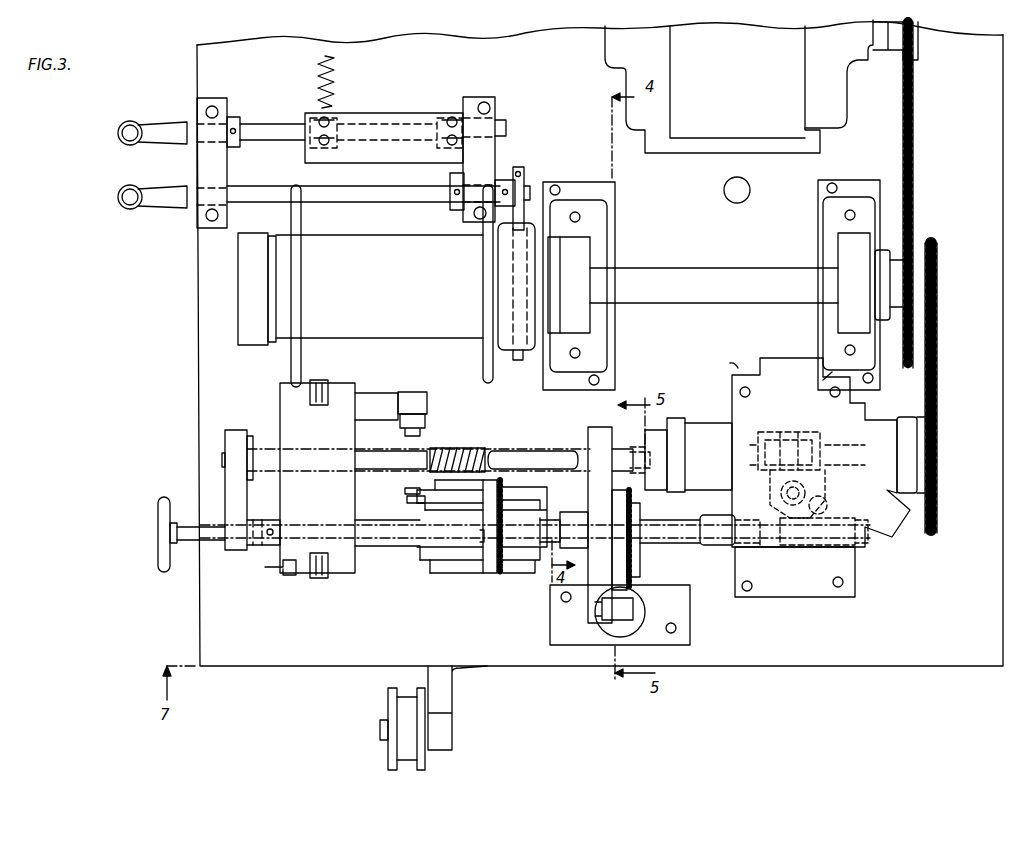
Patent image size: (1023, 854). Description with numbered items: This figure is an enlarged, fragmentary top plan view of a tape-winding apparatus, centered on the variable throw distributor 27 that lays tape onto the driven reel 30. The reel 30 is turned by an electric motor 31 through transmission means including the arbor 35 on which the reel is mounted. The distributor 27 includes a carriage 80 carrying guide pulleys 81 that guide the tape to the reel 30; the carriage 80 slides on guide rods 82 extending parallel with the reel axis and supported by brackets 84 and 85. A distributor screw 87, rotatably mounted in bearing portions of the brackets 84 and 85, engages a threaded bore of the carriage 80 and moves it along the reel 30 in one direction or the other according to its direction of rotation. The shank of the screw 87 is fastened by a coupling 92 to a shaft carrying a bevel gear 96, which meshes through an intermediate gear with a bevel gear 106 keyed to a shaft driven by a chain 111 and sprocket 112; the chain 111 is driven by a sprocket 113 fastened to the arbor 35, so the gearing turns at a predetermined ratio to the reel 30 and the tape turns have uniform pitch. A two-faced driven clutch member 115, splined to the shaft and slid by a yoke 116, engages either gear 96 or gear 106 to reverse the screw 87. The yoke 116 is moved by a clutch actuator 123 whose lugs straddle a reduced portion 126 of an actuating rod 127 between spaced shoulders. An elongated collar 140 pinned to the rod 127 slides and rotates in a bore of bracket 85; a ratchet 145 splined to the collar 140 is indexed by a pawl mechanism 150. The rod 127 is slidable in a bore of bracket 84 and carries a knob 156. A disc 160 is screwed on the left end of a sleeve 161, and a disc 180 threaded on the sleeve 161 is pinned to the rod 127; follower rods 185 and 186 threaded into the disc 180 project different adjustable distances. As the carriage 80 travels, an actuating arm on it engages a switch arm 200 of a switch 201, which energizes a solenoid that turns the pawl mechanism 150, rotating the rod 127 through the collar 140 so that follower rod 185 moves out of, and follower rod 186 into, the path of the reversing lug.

The variable throw distributor 27 is at (248, 410).
The driven reel 30 is at (292, 365).
The electric motor 31 is at (712, 122).
The arbor 35 is at (698, 285).
The carriage 80 is at (350, 572).
The guide pulleys 81 is at (322, 383).
The guide rods 82 is at (535, 455).
The bracket 84 is at (235, 482).
The bracket 85 is at (600, 555).
The distributor screw 87 is at (485, 445).
The coupling 92 is at (680, 492).
The bevel gear 96 is at (750, 430).
The bevel gear 106 is at (832, 468).
The chain 111 is at (935, 350).
The sprocket 112 is at (940, 518).
The sprocket 113 is at (938, 270).
The two-faced driven clutch member 115 is at (805, 435).
The yoke 116 is at (784, 496).
The clutch actuator 123 is at (803, 545).
The reduced portion 126 is at (780, 545).
The actuating rod 127 is at (190, 550).
The elongated collar 140 is at (573, 515).
The ratchet 145 is at (625, 545).
The pawl mechanism 150 is at (630, 577).
The knob 156 is at (157, 545).
The disc 160 is at (297, 576).
The sleeve 161 is at (402, 552).
The disc 180 is at (492, 576).
The follower rod 185 is at (408, 490).
The follower rod 186 is at (420, 500).
The switch arm 200 is at (432, 440).
The switch 201 is at (414, 400).